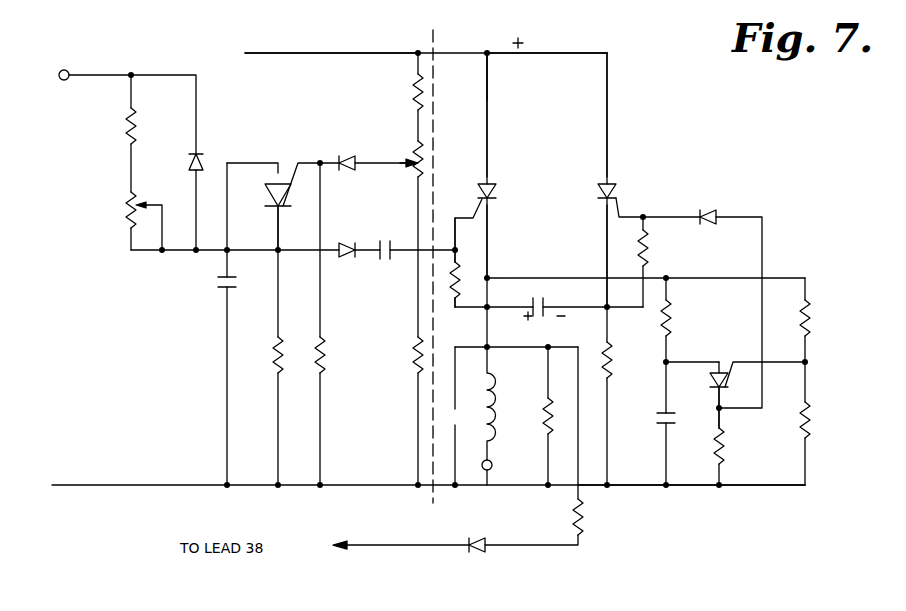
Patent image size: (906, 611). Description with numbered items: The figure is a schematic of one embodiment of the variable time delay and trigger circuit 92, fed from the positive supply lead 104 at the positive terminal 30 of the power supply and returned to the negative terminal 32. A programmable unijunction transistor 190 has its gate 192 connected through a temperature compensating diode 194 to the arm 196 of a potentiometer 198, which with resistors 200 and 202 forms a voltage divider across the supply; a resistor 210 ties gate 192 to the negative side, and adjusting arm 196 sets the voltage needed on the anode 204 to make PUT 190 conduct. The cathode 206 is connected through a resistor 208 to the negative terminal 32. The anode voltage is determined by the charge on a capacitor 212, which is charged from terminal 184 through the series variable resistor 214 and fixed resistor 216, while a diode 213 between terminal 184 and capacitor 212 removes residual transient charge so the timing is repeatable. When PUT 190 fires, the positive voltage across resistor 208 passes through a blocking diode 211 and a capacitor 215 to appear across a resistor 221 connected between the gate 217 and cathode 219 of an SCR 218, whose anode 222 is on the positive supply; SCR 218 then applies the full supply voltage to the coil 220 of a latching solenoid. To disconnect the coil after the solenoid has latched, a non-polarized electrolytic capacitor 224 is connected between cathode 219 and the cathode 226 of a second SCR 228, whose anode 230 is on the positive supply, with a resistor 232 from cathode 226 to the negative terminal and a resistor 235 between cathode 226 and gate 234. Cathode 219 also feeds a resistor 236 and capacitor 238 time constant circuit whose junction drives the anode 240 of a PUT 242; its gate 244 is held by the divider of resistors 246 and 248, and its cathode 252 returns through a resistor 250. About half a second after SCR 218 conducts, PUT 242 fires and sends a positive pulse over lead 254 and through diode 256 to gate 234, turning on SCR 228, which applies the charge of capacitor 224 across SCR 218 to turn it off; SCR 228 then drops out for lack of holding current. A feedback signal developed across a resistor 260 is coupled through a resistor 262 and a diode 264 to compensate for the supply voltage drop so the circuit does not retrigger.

The positive supply lead 30 is at (540, 53).
The negative terminal 32 is at (634, 487).
The control circuit 92 is at (303, 52).
The supply lead 104 is at (500, 50).
The terminal 184 is at (80, 58).
The programmable unijunction transistor 190 is at (264, 197).
The gate 192 is at (298, 168).
The temperature compensating diode 194 is at (350, 152).
The arm 196 is at (405, 165).
The potentiometer 198 is at (424, 153).
The resistor 200 is at (412, 99).
The resistor 202 is at (415, 366).
The anode 204 is at (277, 151).
The cathode 206 is at (277, 238).
The resistor 208 is at (277, 365).
The resistor 210 is at (324, 343).
The blocking diode 211 is at (355, 231).
The capacitor 212 is at (218, 283).
The diode 213 is at (188, 163).
The variable resistor 214 is at (126, 208).
The capacitor 215 is at (402, 232).
The fixed resistor 216 is at (126, 122).
The gate 217 is at (472, 212).
The SCR 218 is at (492, 191).
The cathode 219 is at (491, 213).
The coil 220 is at (490, 451).
The resistor 221 is at (456, 290).
The anode 222 is at (488, 146).
The non-polarized electrolytic capacitor 224 is at (546, 317).
The cathode 226 is at (606, 253).
The SCR 228 is at (602, 195).
The anode 230 is at (608, 119).
The resistor 232 is at (611, 353).
The gate 234 is at (618, 206).
The resistor 235 is at (652, 243).
The resistor 236 is at (670, 310).
The capacitor 238 is at (657, 418).
The anode 240 is at (690, 360).
The programmable unijunction transistor 242 is at (711, 389).
The gate 244 is at (728, 366).
The resistor 246 is at (807, 304).
The resistor 248 is at (808, 411).
The resistor 250 is at (722, 454).
The cathode 252 is at (722, 412).
The lead 254 is at (763, 238).
The diode 256 is at (714, 206).
The resistor 260 is at (552, 413).
The resistor 262 is at (582, 519).
The diode 264 is at (482, 540).